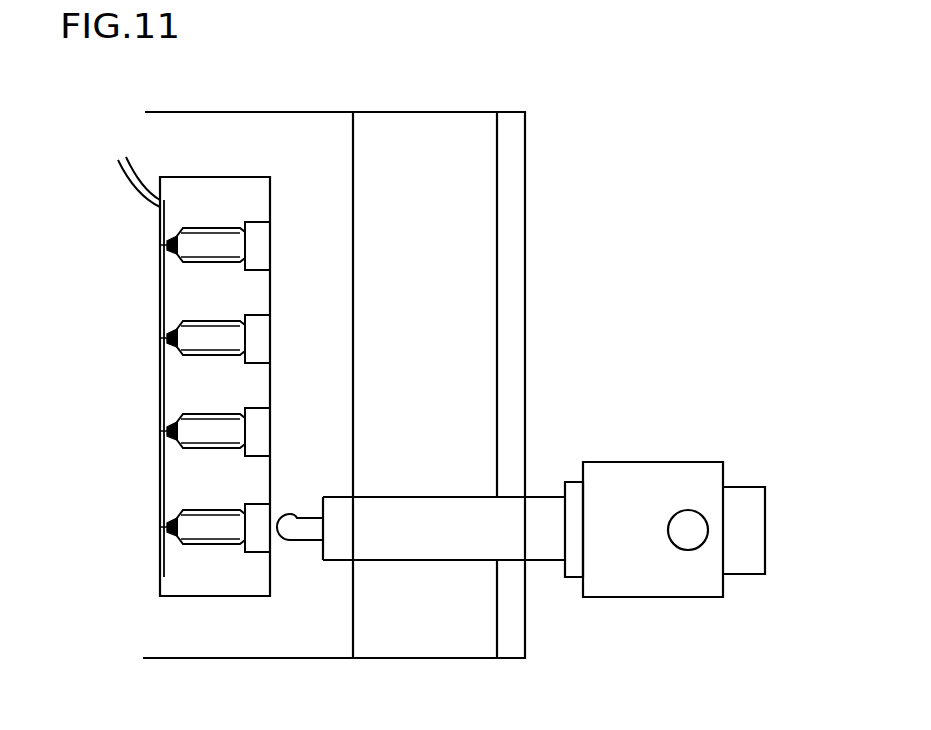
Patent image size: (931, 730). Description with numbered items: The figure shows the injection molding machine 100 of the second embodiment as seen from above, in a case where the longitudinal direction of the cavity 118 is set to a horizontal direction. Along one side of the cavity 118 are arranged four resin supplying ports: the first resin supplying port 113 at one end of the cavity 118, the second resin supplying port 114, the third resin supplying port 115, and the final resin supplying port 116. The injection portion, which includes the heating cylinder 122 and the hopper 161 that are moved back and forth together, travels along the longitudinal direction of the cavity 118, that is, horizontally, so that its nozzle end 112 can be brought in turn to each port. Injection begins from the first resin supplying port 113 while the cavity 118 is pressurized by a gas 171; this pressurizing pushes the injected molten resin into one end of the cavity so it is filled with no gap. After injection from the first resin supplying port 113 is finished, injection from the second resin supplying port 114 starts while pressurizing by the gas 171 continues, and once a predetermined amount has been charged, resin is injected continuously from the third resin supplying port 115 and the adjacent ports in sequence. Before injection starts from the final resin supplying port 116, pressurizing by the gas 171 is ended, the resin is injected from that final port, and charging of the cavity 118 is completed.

The injection molding machine 100 is at (772, 172).
The gas 171 is at (120, 155).
The cavity 118 is at (164, 472).
The final resin supplying port 116 is at (165, 246).
The third resin supplying port 115 is at (174, 339).
The second resin supplying port 114 is at (174, 432).
The first resin supplying port 113 is at (174, 528).
The connector nozzle 112 is at (281, 528).
The heating cylinder 122 is at (437, 503).
The hopper 161 is at (688, 523).